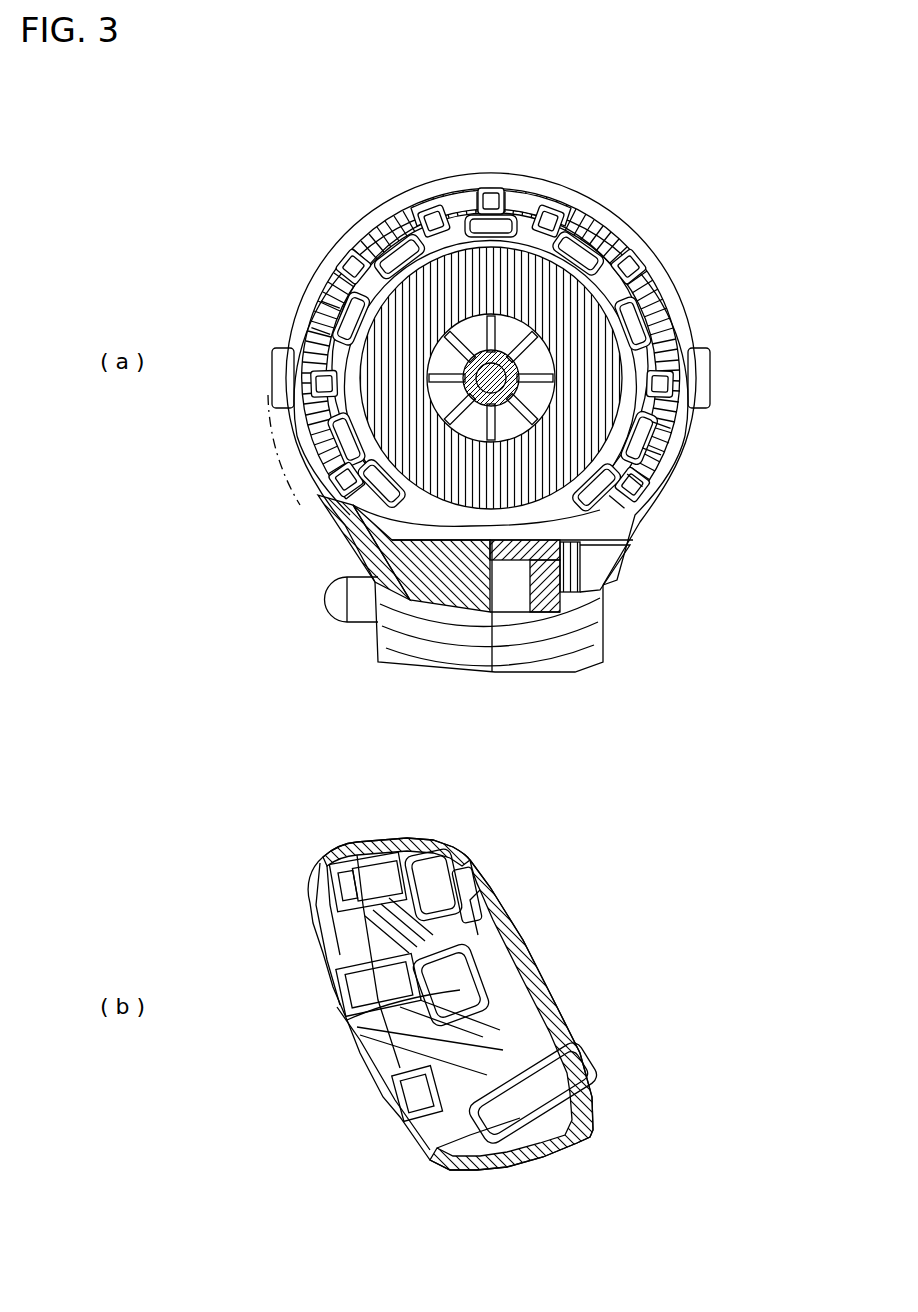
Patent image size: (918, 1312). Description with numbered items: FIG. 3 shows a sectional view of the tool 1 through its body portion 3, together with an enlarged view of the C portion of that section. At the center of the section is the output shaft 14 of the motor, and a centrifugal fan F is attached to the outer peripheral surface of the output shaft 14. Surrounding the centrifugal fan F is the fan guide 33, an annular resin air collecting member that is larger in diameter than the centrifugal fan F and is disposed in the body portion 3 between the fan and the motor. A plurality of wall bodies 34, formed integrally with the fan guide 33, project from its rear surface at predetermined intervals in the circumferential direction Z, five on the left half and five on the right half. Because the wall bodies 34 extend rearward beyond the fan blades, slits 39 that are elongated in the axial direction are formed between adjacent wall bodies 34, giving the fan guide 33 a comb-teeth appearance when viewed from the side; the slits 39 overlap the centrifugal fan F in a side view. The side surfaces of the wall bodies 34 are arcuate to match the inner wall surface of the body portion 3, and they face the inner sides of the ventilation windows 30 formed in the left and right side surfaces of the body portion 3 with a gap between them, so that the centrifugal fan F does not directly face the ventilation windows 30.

The motor 1 is at (665, 125).
The body portion 3 is at (618, 207).
The output shaft 14 is at (430, 468).
The ventilation windows 30 is at (350, 243).
The fan guide 33 is at (632, 540).
The wall bodies 34 is at (372, 255).
The slits 39 is at (318, 285).
The centrifugal fan F is at (480, 365).
The circumferential direction Z is at (235, 372).
The C portion C is at (283, 477).